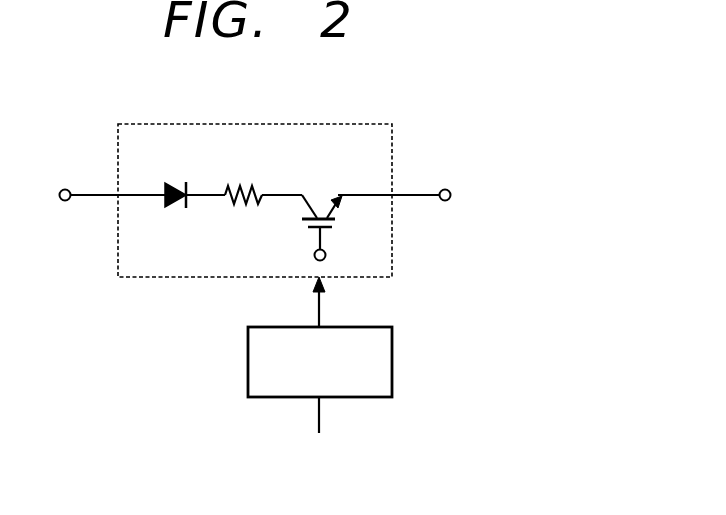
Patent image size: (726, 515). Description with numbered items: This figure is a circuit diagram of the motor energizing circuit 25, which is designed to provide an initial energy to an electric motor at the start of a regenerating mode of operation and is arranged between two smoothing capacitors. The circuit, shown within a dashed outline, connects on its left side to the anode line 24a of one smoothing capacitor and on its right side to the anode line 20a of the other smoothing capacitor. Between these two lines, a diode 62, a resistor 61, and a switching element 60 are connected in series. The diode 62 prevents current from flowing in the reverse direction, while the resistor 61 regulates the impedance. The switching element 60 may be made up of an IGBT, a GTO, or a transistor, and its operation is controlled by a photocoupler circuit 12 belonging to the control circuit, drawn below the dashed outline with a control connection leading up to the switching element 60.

The anode line 24a is at (66, 188).
The anode line 20a is at (446, 188).
The motor energizing circuit 25 is at (351, 123).
The diode 62 is at (176, 182).
The resistor 61 is at (250, 182).
The switching element 60 is at (321, 198).
The photocoupler circuit 12 is at (350, 327).